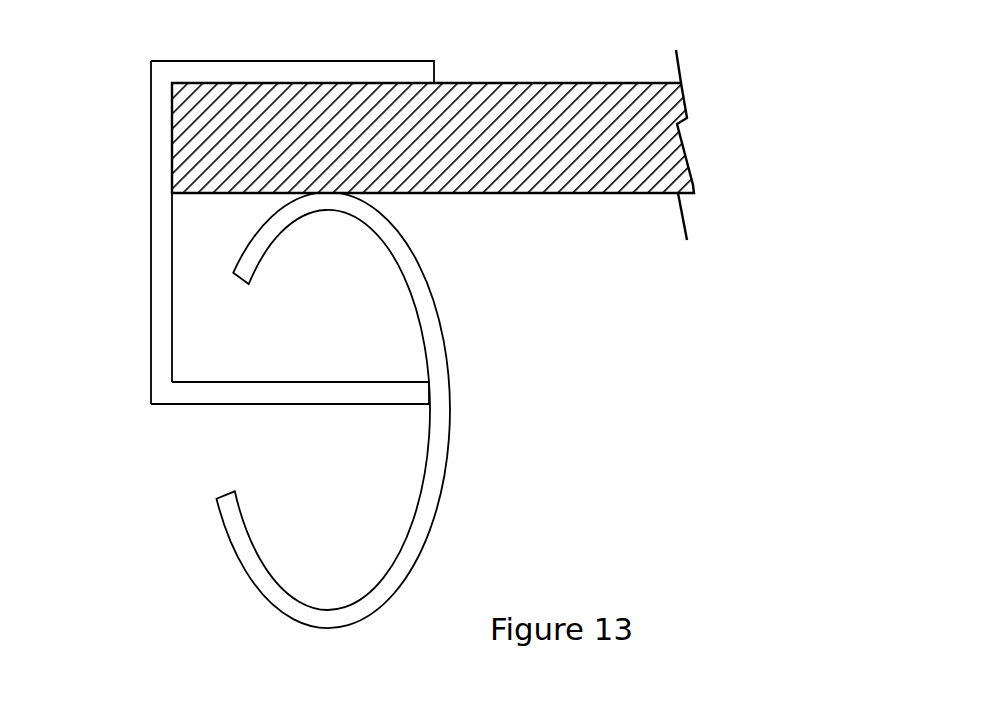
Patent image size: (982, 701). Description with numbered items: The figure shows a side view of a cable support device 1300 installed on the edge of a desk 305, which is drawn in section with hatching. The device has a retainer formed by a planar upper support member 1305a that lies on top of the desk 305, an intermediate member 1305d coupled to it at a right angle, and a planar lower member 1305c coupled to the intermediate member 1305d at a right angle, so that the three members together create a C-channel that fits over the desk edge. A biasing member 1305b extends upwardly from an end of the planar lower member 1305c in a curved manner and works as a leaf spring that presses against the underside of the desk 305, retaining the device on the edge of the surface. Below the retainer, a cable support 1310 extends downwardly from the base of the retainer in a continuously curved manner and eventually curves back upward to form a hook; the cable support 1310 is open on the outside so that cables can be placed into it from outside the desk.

The desk 305 is at (565, 74).
The cable support device 1300 is at (335, 316).
The planar upper support member 1305a is at (250, 52).
The biasing member 1305b is at (441, 279).
The planar lower member 1305c is at (299, 372).
The intermediate member 1305d is at (144, 272).
The cable support 1310 is at (169, 455).